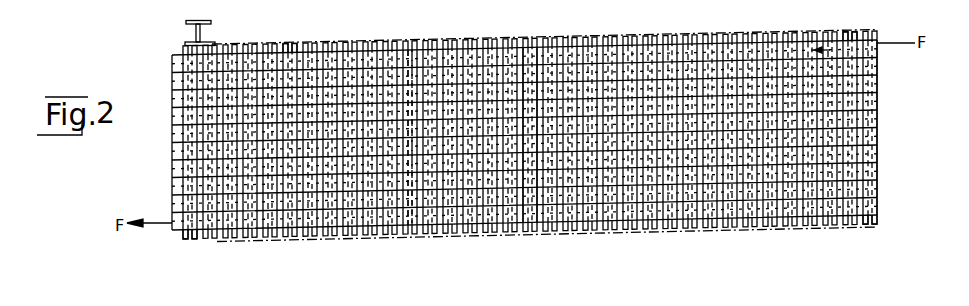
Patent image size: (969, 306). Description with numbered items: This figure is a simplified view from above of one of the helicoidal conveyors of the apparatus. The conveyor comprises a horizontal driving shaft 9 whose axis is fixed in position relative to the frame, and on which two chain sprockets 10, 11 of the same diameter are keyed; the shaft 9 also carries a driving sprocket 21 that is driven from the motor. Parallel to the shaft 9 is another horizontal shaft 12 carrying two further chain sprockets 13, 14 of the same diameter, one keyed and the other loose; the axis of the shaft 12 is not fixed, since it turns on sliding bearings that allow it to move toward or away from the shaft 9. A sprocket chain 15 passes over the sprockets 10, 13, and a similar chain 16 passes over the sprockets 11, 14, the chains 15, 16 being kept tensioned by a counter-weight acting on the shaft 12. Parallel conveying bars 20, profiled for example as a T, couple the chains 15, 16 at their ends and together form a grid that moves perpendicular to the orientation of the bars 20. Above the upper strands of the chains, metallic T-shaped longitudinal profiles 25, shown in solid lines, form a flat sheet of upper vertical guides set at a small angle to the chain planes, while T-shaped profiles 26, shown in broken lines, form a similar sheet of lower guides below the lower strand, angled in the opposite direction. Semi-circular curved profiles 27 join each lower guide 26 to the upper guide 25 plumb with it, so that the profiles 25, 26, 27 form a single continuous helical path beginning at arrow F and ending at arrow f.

The horizontal driving shaft 9 is at (204, 31).
The chain sprocket 10 is at (192, 240).
The chain sprocket 11 is at (184, 44).
The horizontal shaft 12 is at (846, 34).
The chain sprocket 13 is at (863, 228).
The chain sprocket 14 is at (862, 36).
The sprocket chain 15 is at (665, 240).
The sprocket chain 16 is at (621, 41).
The conveying bars 20 is at (290, 45).
The driving sprocket 21 is at (198, 22).
The longitudinal T-shaped profiles 25 is at (527, 80).
The longitudinal T-shaped profiles 26 is at (411, 67).
The semi-circular curved profiles 27 is at (174, 88).